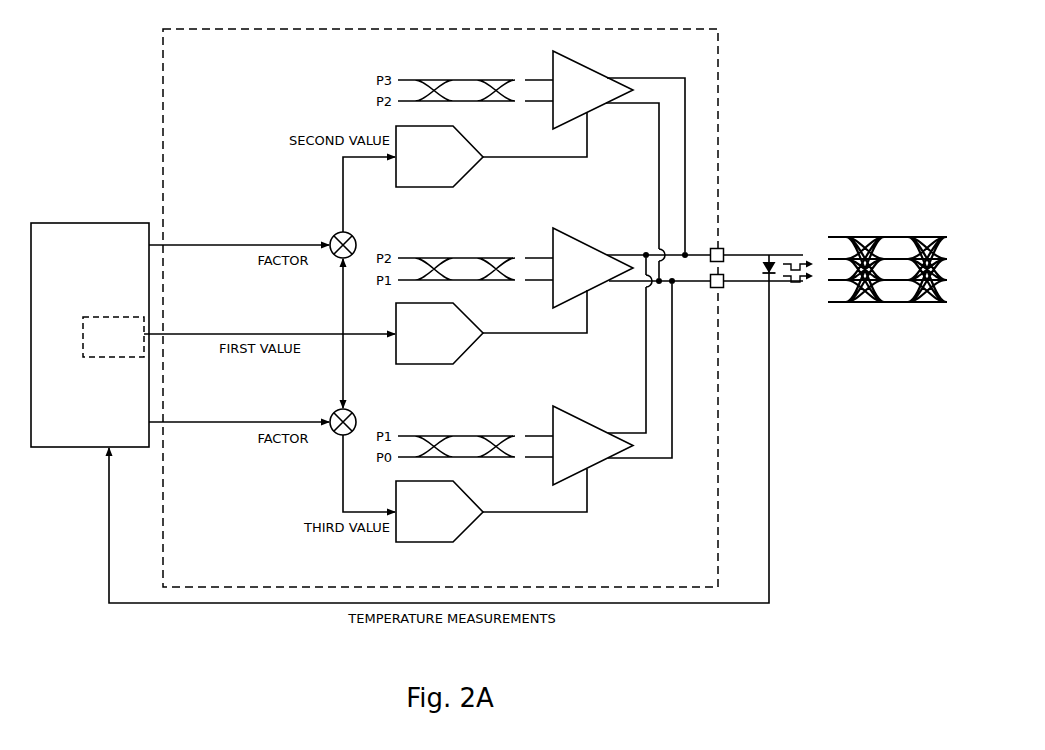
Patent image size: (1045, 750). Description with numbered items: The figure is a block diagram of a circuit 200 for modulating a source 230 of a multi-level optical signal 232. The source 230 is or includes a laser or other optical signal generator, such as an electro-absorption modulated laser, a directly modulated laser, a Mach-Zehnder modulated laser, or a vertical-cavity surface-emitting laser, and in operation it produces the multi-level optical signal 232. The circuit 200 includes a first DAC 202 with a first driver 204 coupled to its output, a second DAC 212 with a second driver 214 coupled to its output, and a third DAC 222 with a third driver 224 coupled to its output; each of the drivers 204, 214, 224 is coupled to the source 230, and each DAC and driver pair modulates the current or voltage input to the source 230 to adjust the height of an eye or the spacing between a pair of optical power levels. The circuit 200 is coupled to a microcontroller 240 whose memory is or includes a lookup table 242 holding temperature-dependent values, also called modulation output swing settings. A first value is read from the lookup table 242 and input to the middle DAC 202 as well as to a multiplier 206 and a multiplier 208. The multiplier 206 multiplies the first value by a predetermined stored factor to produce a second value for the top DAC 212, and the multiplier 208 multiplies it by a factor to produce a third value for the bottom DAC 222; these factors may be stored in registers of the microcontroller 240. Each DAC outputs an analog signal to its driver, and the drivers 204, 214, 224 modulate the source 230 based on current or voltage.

The circuit 200 is at (195, 68).
The first DAC 202 is at (417, 340).
The first driver 204 is at (571, 276).
The multiplier 206 is at (356, 230).
The multiplier 208 is at (356, 410).
The second DAC 212 is at (417, 164).
The second driver 214 is at (571, 98).
The third DAC 222 is at (417, 520).
The third driver 224 is at (571, 452).
The source 230 is at (758, 246).
The multi-level optical signal 232 is at (886, 226).
The microcontroller 240 is at (78, 254).
The lookup table 242 is at (101, 336).